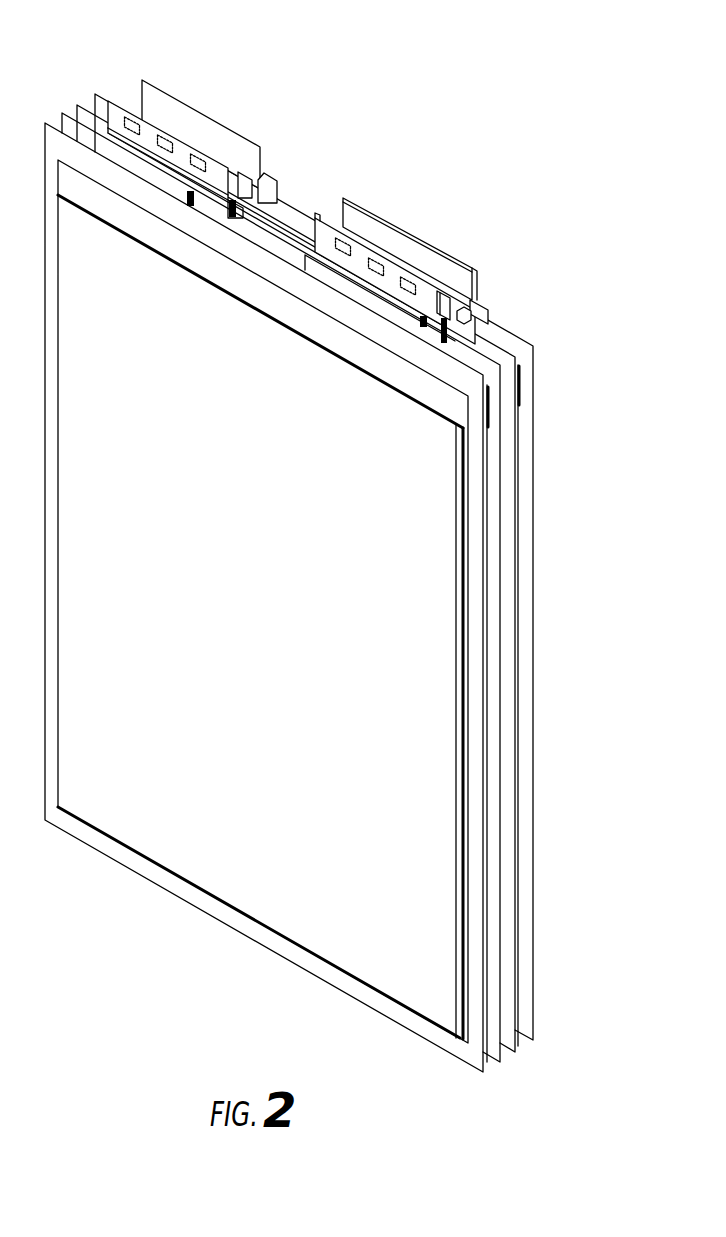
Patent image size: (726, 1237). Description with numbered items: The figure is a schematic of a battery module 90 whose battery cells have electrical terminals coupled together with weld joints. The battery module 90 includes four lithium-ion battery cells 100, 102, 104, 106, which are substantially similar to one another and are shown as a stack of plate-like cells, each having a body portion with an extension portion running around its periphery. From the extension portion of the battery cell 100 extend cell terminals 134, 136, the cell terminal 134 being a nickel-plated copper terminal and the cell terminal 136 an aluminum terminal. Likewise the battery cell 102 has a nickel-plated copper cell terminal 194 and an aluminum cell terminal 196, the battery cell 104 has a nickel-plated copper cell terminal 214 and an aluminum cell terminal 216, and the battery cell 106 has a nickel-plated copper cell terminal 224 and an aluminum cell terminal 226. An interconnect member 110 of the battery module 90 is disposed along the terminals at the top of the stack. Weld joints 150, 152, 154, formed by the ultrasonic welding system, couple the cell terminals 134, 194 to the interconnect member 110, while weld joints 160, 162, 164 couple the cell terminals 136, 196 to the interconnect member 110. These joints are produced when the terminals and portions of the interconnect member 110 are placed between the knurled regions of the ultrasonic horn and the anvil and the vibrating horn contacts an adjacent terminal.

The battery module 90 is at (403, 94).
The battery cell 100 is at (470, 1052).
The battery cell 102 is at (493, 1048).
The battery cell 104 is at (508, 1042).
The battery cell 106 is at (525, 1032).
The interconnect member 110 is at (442, 266).
The cell terminal 134 is at (422, 322).
The cell terminal 136 is at (192, 192).
The weld joint 150 is at (409, 284).
The weld joint 152 is at (376, 265).
The weld joint 154 is at (344, 246).
The weld joint 160 is at (199, 158).
The weld joint 162 is at (163, 136).
The weld joint 164 is at (129, 116).
The cell terminal 194 is at (444, 330).
The cell terminal 196 is at (231, 202).
The cell terminal 214 is at (471, 326).
The cell terminal 216 is at (238, 170).
The cell terminal 224 is at (481, 307).
The cell terminal 226 is at (272, 178).